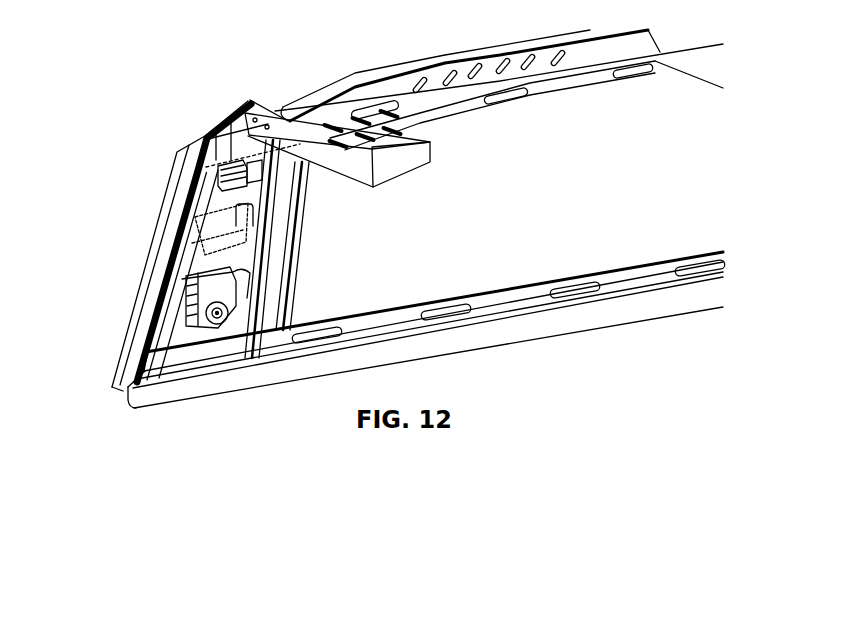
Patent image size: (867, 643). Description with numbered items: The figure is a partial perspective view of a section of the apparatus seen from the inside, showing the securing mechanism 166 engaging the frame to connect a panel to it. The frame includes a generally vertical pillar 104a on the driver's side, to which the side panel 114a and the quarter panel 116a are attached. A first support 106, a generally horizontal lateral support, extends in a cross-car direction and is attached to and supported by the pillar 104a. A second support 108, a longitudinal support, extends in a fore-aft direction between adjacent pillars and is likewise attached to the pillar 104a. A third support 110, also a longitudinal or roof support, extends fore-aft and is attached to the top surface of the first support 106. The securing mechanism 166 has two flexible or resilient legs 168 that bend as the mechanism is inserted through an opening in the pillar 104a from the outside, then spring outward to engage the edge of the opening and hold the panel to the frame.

The pillar 104a is at (183, 344).
The first support 106 is at (428, 144).
The second support 108 is at (627, 311).
The third support 110 is at (367, 97).
The side panel 114a is at (565, 208).
The quarter panel 116a is at (212, 265).
The securing mechanism 166 is at (208, 179).
The flexible legs 168 is at (250, 170).